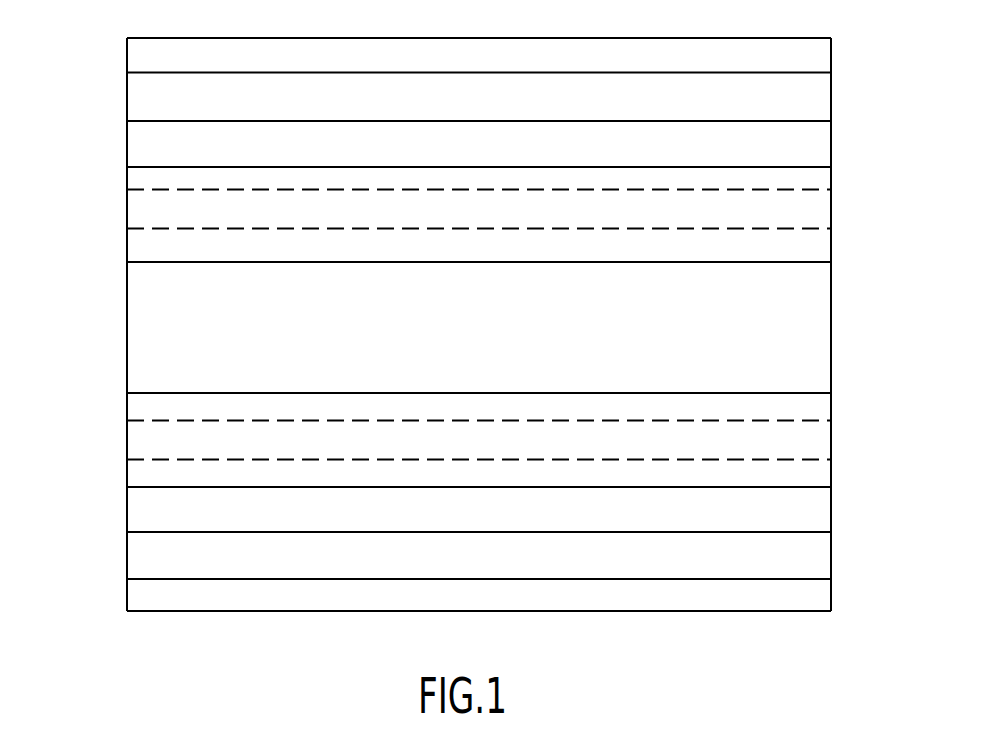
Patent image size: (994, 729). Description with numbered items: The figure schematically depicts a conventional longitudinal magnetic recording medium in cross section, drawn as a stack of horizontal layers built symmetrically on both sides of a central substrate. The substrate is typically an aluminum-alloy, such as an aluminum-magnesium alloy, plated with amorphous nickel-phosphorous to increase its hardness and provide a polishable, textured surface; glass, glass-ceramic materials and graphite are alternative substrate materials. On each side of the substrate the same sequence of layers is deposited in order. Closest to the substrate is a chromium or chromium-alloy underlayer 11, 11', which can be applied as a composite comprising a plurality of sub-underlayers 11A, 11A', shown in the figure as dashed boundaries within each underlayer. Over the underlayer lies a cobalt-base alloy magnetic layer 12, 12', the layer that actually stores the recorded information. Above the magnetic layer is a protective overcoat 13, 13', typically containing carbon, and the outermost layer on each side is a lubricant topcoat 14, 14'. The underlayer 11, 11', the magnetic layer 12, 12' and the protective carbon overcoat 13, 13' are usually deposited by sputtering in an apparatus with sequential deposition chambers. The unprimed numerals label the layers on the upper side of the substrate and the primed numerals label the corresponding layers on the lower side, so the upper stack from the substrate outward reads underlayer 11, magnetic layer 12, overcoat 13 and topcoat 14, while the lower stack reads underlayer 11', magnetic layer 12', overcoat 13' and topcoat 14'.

The underlayer 11 is at (511, 218).
The sub-underlayer 11A is at (438, 208).
The magnetic layer 12 is at (508, 137).
The protective overcoat 13 is at (508, 89).
The lubricant topcoat 14 is at (508, 41).
The underlayer 11' is at (518, 416).
The sub-underlayer 11A' is at (438, 442).
The magnetic layer 12' is at (440, 506).
The protective overcoat 13' is at (440, 552).
The lubricant topcoat 14' is at (440, 594).